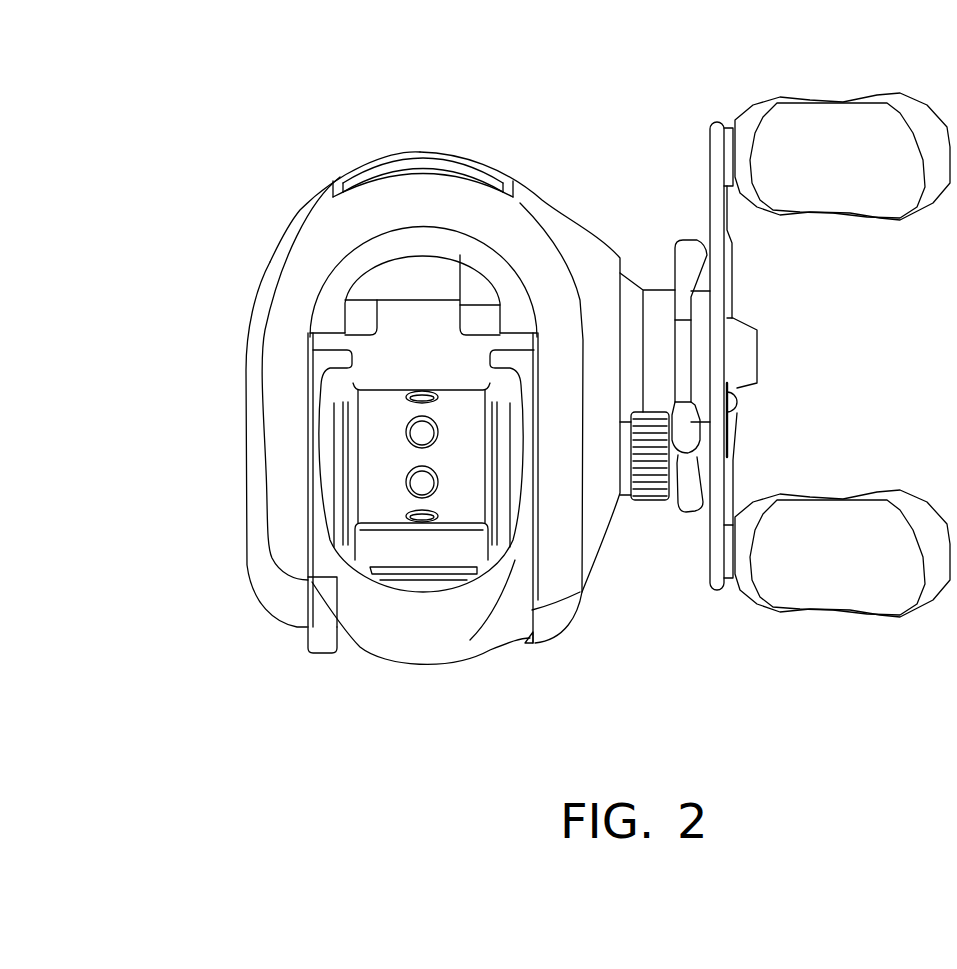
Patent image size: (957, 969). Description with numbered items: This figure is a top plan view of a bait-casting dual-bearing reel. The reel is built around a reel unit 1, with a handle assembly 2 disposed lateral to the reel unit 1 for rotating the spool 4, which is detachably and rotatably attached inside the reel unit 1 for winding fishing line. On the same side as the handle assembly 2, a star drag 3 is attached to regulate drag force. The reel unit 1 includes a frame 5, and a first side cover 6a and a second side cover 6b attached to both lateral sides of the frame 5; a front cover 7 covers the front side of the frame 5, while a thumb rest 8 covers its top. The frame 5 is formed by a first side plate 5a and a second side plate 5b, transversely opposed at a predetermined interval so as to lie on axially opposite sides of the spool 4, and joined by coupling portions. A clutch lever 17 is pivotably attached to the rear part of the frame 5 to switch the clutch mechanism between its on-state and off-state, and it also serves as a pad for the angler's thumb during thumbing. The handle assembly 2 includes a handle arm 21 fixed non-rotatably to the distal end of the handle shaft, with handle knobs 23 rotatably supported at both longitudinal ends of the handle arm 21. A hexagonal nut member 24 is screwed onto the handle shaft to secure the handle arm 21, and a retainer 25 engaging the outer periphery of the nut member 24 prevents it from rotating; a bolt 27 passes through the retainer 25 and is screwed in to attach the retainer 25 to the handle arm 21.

The reel unit 1 is at (528, 146).
The handle assembly 2 is at (718, 125).
The star drag 3 is at (690, 245).
The spool 4 is at (388, 407).
The frame 5 is at (535, 215).
The first side plate 5a is at (308, 635).
The second side plate 5b is at (535, 640).
The first side cover 6a is at (253, 366).
The second side cover 6b is at (600, 257).
The front cover 7 is at (400, 163).
The thumb rest 8 is at (300, 263).
The clutch lever 17 is at (430, 627).
The handle arm 21 is at (716, 293).
The handle knob 23 is at (852, 133).
The nut member 24 is at (750, 368).
The retainer 25 is at (729, 457).
The bolt 27 is at (738, 408).